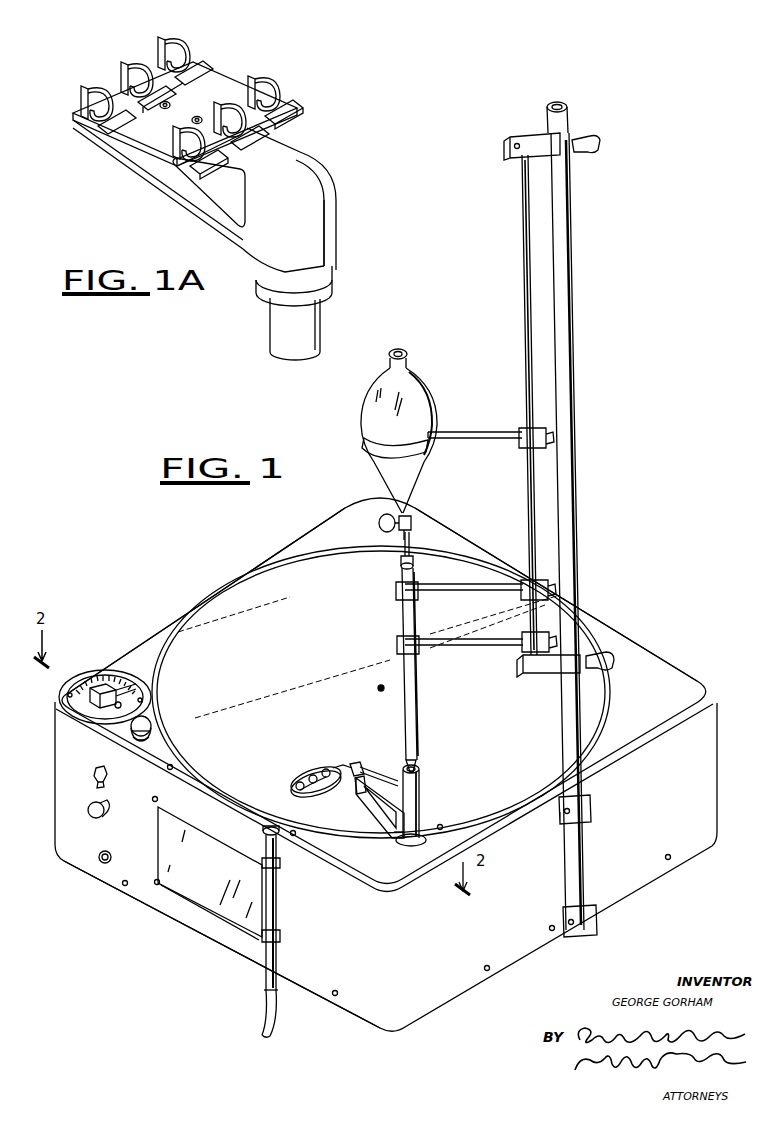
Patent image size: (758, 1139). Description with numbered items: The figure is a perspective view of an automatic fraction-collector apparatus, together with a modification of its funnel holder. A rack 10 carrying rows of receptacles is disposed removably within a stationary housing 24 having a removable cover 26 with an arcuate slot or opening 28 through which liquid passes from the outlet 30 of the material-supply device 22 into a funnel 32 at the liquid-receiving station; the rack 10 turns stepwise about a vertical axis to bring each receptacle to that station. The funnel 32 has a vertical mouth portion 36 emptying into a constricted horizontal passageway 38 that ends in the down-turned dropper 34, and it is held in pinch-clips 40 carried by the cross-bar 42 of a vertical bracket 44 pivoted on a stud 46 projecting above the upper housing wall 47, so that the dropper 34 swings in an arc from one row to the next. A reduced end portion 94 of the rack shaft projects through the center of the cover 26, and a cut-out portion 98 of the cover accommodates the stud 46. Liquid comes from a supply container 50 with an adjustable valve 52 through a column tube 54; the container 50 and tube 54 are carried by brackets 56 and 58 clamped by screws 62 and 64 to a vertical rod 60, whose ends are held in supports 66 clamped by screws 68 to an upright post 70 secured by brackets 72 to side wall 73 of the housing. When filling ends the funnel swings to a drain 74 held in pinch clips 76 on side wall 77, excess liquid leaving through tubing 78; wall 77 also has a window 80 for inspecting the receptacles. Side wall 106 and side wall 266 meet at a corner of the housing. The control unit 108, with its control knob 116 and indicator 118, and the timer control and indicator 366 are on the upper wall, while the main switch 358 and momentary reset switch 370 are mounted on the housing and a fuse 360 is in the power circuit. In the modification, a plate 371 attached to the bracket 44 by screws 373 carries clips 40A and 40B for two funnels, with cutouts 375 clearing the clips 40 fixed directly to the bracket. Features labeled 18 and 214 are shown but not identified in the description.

In FIG. 1, the rack 10 is at (305, 781).
In FIG. 1, the holder holes 18 is at (312, 784).
In FIG. 1, the material-supply device 22 is at (422, 489).
In FIG. 1, the stationary housing 24 is at (641, 654).
In FIG. 1, the removable cover 26 is at (608, 703).
In FIG. 1, the slot or opening 28 is at (290, 782).
In FIG. 1, the outlet 30 is at (415, 762).
In FIG. 1, the funnel 32 is at (424, 784).
In FIG. 1, the liquid outlet or dropper 34 is at (333, 767).
In FIG. 1, the mouth portion 36 is at (420, 769).
In FIG. 1, the tubular part or liquid passageway 38 is at (378, 776).
In FIG. 1A, the pinch-clips 40 is at (138, 70).
In FIG. 1, the pinch-clips 40 is at (360, 764).
In FIG. 1A, the clips 40A is at (189, 40).
In FIG. 1A, the clips 40B is at (84, 100).
In FIG. 1A, the cross-bar 42 is at (281, 158).
In FIG. 1, the cross-bar 42 is at (362, 786).
In FIG. 1A, the bracket 44 is at (322, 242).
In FIG. 1, the bracket 44 is at (410, 819).
In FIG. 1A, the rotatable support or stud 46 is at (268, 292).
In FIG. 1, the rotatable support or stud 46 is at (408, 845).
In FIG. 1, the upper housing wall 47 is at (349, 866).
In FIG. 1, the supply container 50 is at (421, 399).
In FIG. 1, the adjustable valve 52 is at (379, 524).
In FIG. 1, the tube 54 is at (412, 624).
In FIG. 1, the support or bracket 56 is at (466, 434).
In FIG. 1, the support or bracket 58 is at (470, 587).
In FIG. 1, the vertically disposed rod 60 is at (528, 496).
In FIG. 1, the clamping screw 62 is at (524, 447).
In FIG. 1, the clamping screw 64 is at (528, 600).
In FIG. 1, the support 66 is at (536, 144).
In FIG. 1, the clamping screws 68 is at (590, 151).
In FIG. 1, the upright post 70 is at (569, 434).
In FIG. 1, the brackets 72 is at (591, 812).
In FIG. 1, the side wall 73 is at (712, 771).
In FIG. 1, the drain 74 is at (277, 902).
In FIG. 1, the pinch clips 76 is at (280, 863).
In FIG. 1, the side wall 77 is at (222, 938).
In FIG. 1, the tubing 78 is at (266, 1014).
In FIG. 1, the window 80 is at (188, 890).
In FIG. 1, the reduced end portion 94 is at (378, 688).
In FIG. 1, the cut-out portion 98 is at (394, 833).
In FIG. 1, the side wall 106 is at (177, 622).
In FIG. 1, the control unit 108 is at (152, 723).
In FIG. 1, the control knob 116 is at (155, 710).
In FIG. 1, the indicator 118 is at (136, 742).
In FIG. 1A, the arm shaft 214 is at (284, 326).
In FIG. 1, the side wall 266 is at (624, 630).
In FIG. 1, the main manually controlled switch 358 is at (94, 782).
In FIG. 1, the fuse 360 is at (100, 857).
In FIG. 1, the controls 366 is at (104, 690).
In FIG. 1, the momentary reset switch 370 is at (104, 805).
In FIG. 1A, the plate 371 is at (215, 80).
In FIG. 1A, the screws 373 is at (171, 105).
In FIG. 1A, the cutouts 375 is at (130, 112).